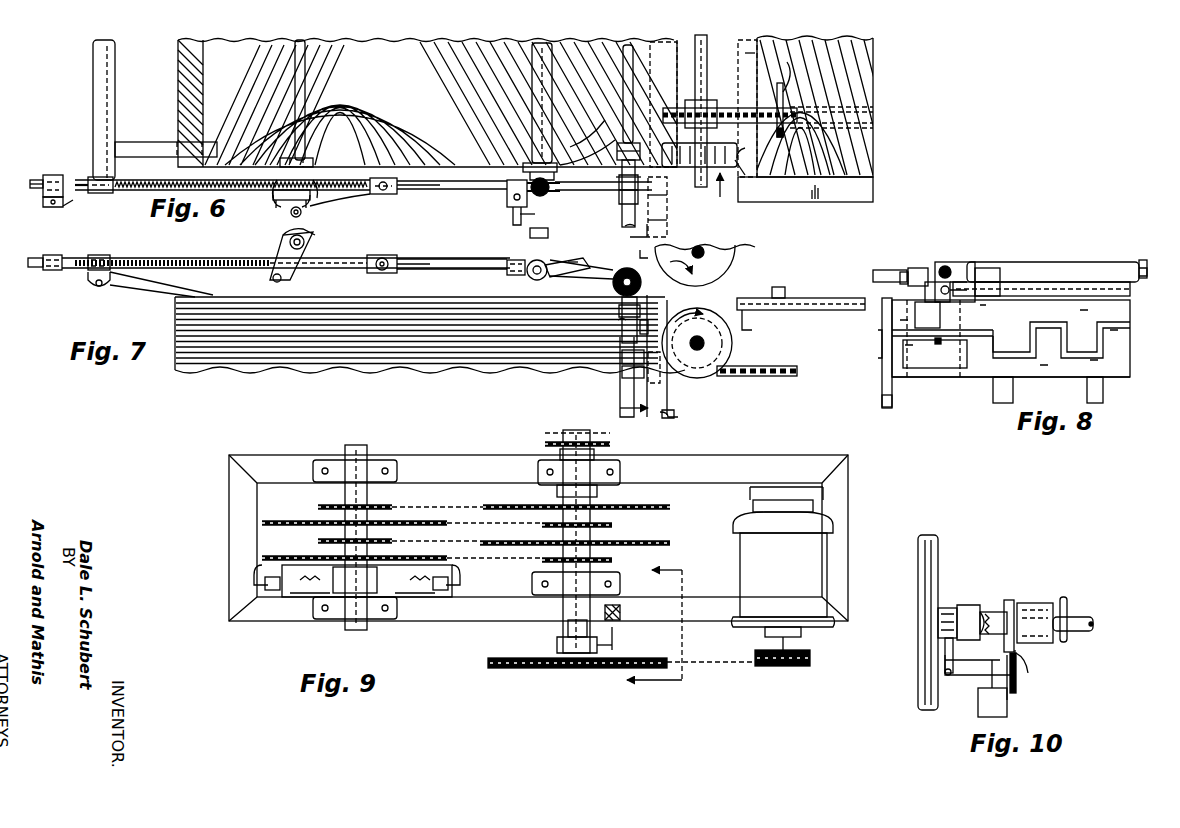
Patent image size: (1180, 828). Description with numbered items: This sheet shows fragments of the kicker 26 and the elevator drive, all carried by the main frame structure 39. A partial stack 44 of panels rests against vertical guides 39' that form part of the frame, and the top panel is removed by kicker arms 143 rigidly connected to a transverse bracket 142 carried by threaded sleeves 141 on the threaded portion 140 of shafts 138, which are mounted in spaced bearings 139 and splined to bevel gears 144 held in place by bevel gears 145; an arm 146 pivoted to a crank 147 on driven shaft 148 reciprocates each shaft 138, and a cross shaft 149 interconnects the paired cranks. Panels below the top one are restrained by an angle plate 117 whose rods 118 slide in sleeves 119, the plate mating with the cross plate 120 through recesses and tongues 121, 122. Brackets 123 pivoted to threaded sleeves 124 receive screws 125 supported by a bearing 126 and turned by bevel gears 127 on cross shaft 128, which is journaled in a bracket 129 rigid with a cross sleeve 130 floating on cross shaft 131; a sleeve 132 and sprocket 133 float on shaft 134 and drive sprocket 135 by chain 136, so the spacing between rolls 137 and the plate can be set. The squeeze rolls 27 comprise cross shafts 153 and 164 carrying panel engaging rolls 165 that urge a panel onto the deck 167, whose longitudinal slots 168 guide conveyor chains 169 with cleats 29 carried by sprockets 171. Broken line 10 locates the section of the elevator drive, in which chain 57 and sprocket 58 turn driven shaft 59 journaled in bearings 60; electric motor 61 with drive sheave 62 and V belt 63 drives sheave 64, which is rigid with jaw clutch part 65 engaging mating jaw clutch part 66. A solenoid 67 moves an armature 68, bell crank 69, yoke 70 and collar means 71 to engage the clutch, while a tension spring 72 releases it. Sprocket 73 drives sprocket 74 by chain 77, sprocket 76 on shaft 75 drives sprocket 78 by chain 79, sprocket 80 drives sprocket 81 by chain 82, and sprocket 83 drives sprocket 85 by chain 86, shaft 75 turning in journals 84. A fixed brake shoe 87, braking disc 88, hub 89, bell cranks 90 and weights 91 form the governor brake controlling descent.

In FIG. 9, the machine 10 is at (664, 629).
In FIG. 6, the kicker 26 is at (83, 127).
In FIG. 7, the kicker 26 is at (72, 311).
In FIG. 6, the squeeze rolls 27 is at (726, 198).
In FIG. 7, the squeeze rolls 27 is at (758, 270).
In FIG. 6, the cleats 29 is at (776, 73).
In FIG. 7, the cleats 29 is at (811, 287).
In FIG. 6, the main frame structure 39 is at (287, 209).
In FIG. 7, the main frame structure 39 is at (489, 328).
In FIG. 8, the main frame structure 39 is at (901, 360).
In FIG. 9, the main frame structure 39 is at (554, 538).
In FIG. 10, the main frame structure 39 is at (1029, 639).
In FIG. 6, the vertical guides 39' is at (716, 111).
In FIG. 7, the vertical guides 39' is at (683, 392).
In FIG. 8, the vertical guides 39' is at (1048, 391).
In FIG. 7, the partial stack 44 is at (222, 376).
In FIG. 8, the partial stack 44 is at (1120, 382).
In FIG. 9, the chain 57 is at (547, 446).
In FIG. 9, the sprocket 58 is at (610, 448).
In FIG. 9, the driven shaft 59 is at (618, 496).
In FIG. 10, the driven shaft 59 is at (1080, 617).
In FIG. 9, the bearings 60 is at (620, 473).
In FIG. 10, the bearings 60 is at (1040, 603).
In FIG. 9, the electric motor 61 is at (800, 583).
In FIG. 9, the drive sheave 62 is at (775, 667).
In FIG. 9, the V belt 63 is at (710, 661).
In FIG. 9, the sheave 64 is at (548, 668).
In FIG. 10, the sheave 64 is at (937, 540).
In FIG. 9, the jaw clutch part 65 is at (565, 612).
In FIG. 10, the jaw clutch part 65 is at (975, 605).
In FIG. 9, the mating jaw clutch part 66 is at (560, 600).
In FIG. 10, the mating jaw clutch part 66 is at (995, 610).
In FIG. 10, the solenoid 67 is at (978, 710).
In FIG. 10, the armature 68 is at (980, 680).
In FIG. 9, the bell crank 69 is at (593, 670).
In FIG. 10, the bell crank 69 is at (945, 655).
In FIG. 9, the yoke 70 is at (520, 668).
In FIG. 10, the yoke 70 is at (940, 623).
In FIG. 9, the collar means 71 is at (568, 670).
In FIG. 10, the collar means 71 is at (960, 605).
In FIG. 10, the tension spring 72 is at (1038, 624).
In FIG. 9, the sprocket 73 is at (612, 560).
In FIG. 10, the sprocket 73 is at (1067, 640).
In FIG. 9, the sprocket 74 is at (267, 552).
In FIG. 9, the shaft 75 is at (353, 472).
In FIG. 9, the sprocket 76 is at (318, 541).
In FIG. 9, the chain 77 is at (470, 558).
In FIG. 9, the sprocket 78 is at (660, 544).
In FIG. 9, the chain 79 is at (444, 544).
In FIG. 9, the sprocket 80 is at (612, 526).
In FIG. 9, the sprocket 81 is at (425, 520).
In FIG. 9, the chain 82 is at (462, 520).
In FIG. 9, the sprocket 83 is at (328, 502).
In FIG. 9, the journals 84 is at (367, 462).
In FIG. 9, the sprocket 85 is at (512, 504).
In FIG. 9, the chain 86 is at (428, 505).
In FIG. 9, the fixed brake shoe 87 is at (300, 595).
In FIG. 9, the braking disc 88 is at (325, 618).
In FIG. 9, the hub 89 is at (370, 580).
In FIG. 9, the bell cranks 90 is at (254, 571).
In FIG. 9, the weights 91 is at (268, 590).
In FIG. 6, the angle plate 117 is at (660, 196).
In FIG. 7, the angle plate 117 is at (680, 265).
In FIG. 8, the angle plate 117 is at (1122, 323).
In FIG. 7, the rods 118 is at (635, 357).
In FIG. 8, the rods 118 is at (905, 350).
In FIG. 7, the sleeves 119 is at (635, 372).
In FIG. 8, the sleeves 119 is at (908, 391).
In FIG. 7, the cross frame or plate 120 is at (649, 403).
In FIG. 8, the cross frame or plate 120 is at (950, 377).
In FIG. 8, the recesses and tongues 121 is at (1022, 320).
In FIG. 8, the recesses and tongues 122 is at (1075, 350).
In FIG. 6, the brackets 123 is at (657, 183).
In FIG. 7, the brackets 123 is at (667, 333).
In FIG. 7, the threaded sleeves 124 is at (640, 333).
In FIG. 7, the screws 125 is at (628, 330).
In FIG. 8, the screws 125 is at (1015, 355).
In FIG. 6, the bearing 126 is at (660, 223).
In FIG. 7, the bearing 126 is at (620, 325).
In FIG. 8, the bearing 126 is at (918, 312).
In FIG. 6, the bevel gears 127 is at (622, 198).
In FIG. 7, the bevel gears 127 is at (618, 310).
In FIG. 8, the bevel gears 127 is at (950, 300).
In FIG. 6, the cross shaft 128 is at (623, 83).
In FIG. 7, the cross shaft 128 is at (613, 276).
In FIG. 8, the cross shaft 128 is at (1072, 275).
In FIG. 6, the bracket 129 is at (570, 147).
In FIG. 7, the bracket 129 is at (622, 268).
In FIG. 6, the cross sleeve 130 is at (553, 76).
In FIG. 8, the cross sleeve 130 is at (1100, 263).
In FIG. 6, the cross shaft 131 is at (553, 52).
In FIG. 8, the cross shaft 131 is at (1145, 262).
In FIG. 6, the sleeve 132 is at (548, 233).
In FIG. 8, the sleeve 132 is at (893, 260).
In FIG. 6, the sprocket 133 is at (550, 219).
In FIG. 7, the sprocket 133 is at (573, 252).
In FIG. 8, the sprocket 133 is at (902, 272).
In FIG. 6, the shaft 134 is at (515, 210).
In FIG. 7, the shaft 134 is at (520, 277).
In FIG. 8, the shaft 134 is at (945, 262).
In FIG. 6, the sprocket 135 is at (622, 208).
In FIG. 7, the sprocket 135 is at (683, 258).
In FIG. 8, the sprocket 135 is at (915, 268).
In FIG. 6, the chain 136 is at (612, 226).
In FIG. 7, the chain 136 is at (622, 247).
In FIG. 6, the rolls 137 is at (622, 148).
In FIG. 8, the rolls 137 is at (1000, 268).
In FIG. 6, the shafts 138 is at (423, 190).
In FIG. 7, the shafts 138 is at (427, 270).
In FIG. 8, the shafts 138 is at (970, 262).
In FIG. 6, the bearings 139 is at (52, 175).
In FIG. 7, the bearings 139 is at (48, 272).
In FIG. 6, the threaded portion 140 is at (155, 180).
In FIG. 7, the threaded portion 140 is at (188, 268).
In FIG. 6, the threaded sleeve 141 is at (106, 194).
In FIG. 7, the threaded sleeve 141 is at (88, 270).
In FIG. 6, the transverse bracket 142 is at (115, 86).
In FIG. 7, the transverse bracket 142 is at (92, 290).
In FIG. 6, the kicker arms 143 is at (138, 142).
In FIG. 7, the kicker arms 143 is at (138, 288).
In FIG. 6, the bevel gear 144 is at (523, 177).
In FIG. 7, the bevel gear 144 is at (530, 278).
In FIG. 8, the bevel gear 144 is at (947, 265).
In FIG. 6, the bevel gears 145 is at (578, 145).
In FIG. 7, the bevel gears 145 is at (543, 282).
In FIG. 8, the bevel gears 145 is at (975, 270).
In FIG. 6, the arm 146 is at (362, 199).
In FIG. 7, the arm 146 is at (332, 270).
In FIG. 6, the crank 147 is at (282, 166).
In FIG. 7, the crank 147 is at (270, 270).
In FIG. 6, the shaft 148 is at (314, 165).
In FIG. 7, the shaft 148 is at (290, 243).
In FIG. 6, the cross shaft 149 is at (305, 92).
In FIG. 6, the cross shaft 153 is at (752, 53).
In FIG. 7, the cross shaft 153 is at (704, 343).
In FIG. 6, the cross shaft 164 is at (740, 160).
In FIG. 7, the cross shaft 164 is at (726, 244).
In FIG. 6, the panel engaging rolls 165 is at (740, 173).
In FIG. 7, the panel engaging rolls 165 is at (735, 262).
In FIG. 6, the deck 167 is at (868, 187).
In FIG. 7, the deck 167 is at (752, 298).
In FIG. 6, the longitudinal slots 168 is at (776, 104).
In FIG. 6, the conveyor chains 169 is at (750, 150).
In FIG. 7, the conveyor chains 169 is at (735, 261).
In FIG. 6, the sprockets 171 is at (730, 103).
In FIG. 7, the sprockets 171 is at (701, 357).